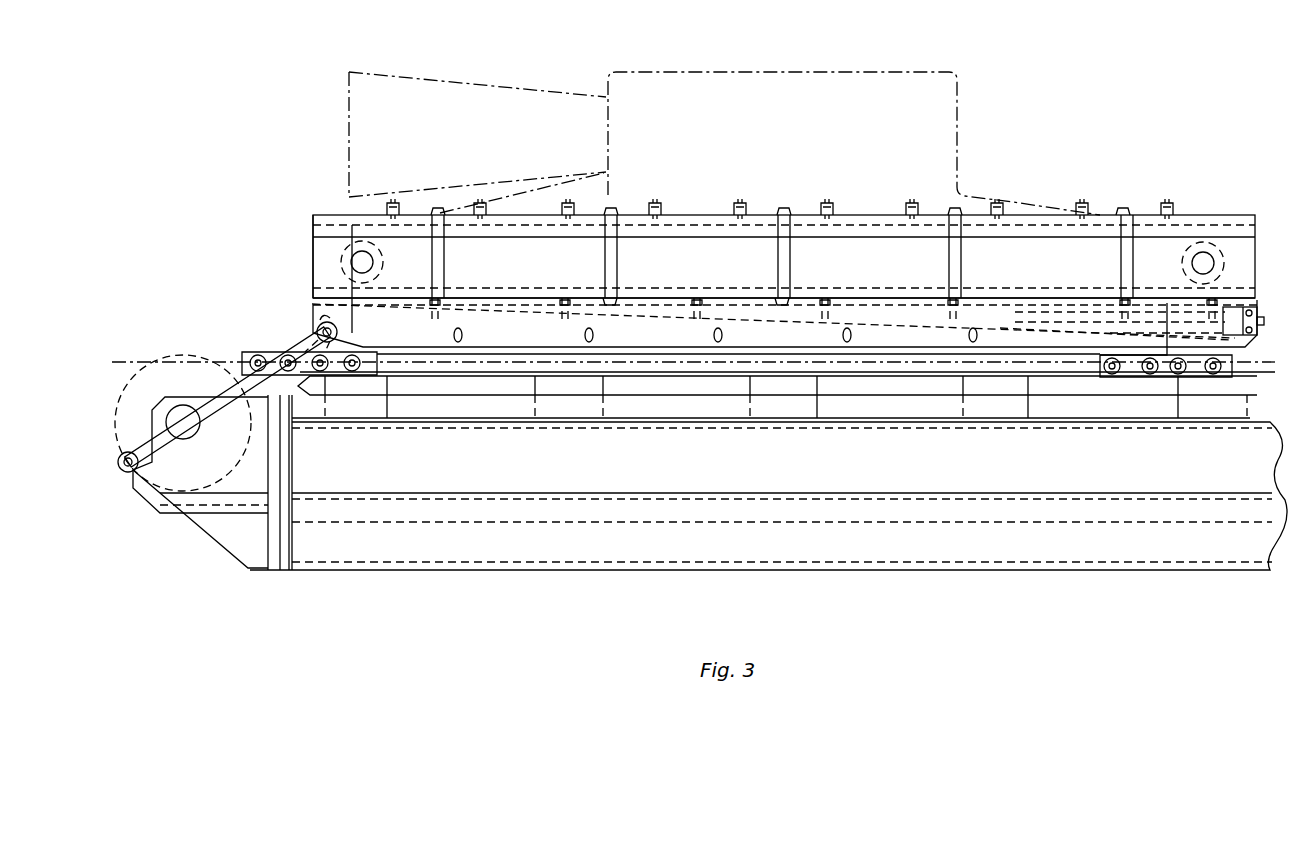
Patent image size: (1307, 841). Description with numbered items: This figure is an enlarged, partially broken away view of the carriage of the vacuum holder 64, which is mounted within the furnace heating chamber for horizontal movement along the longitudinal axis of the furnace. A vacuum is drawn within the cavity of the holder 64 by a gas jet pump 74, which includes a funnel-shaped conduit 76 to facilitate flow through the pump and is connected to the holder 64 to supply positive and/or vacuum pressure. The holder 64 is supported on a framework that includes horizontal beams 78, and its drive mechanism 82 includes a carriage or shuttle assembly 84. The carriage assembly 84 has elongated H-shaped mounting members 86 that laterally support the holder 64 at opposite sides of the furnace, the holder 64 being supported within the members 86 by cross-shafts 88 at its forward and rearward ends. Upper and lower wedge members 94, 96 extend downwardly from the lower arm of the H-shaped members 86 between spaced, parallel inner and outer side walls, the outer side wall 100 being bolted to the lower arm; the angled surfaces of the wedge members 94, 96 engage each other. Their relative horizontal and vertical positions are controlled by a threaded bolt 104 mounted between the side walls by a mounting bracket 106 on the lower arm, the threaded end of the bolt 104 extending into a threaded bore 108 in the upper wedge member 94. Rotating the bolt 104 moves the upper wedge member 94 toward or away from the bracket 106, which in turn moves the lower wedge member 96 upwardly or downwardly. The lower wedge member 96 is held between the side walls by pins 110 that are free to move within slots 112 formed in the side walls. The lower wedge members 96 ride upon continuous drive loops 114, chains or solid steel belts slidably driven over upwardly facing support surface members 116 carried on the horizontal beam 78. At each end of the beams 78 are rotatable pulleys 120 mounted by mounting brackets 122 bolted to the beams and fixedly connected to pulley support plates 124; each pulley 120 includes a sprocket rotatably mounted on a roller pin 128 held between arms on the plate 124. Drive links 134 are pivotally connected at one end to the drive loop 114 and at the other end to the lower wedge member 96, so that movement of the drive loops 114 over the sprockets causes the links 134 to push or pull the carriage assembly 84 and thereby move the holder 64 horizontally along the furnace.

The vacuum holder 64 is at (1193, 216).
The gas jet pump 74 is at (958, 73).
The funnel-shaped conduit 76 is at (503, 87).
The horizontal beam 78 is at (652, 572).
The drive mechanism 82 is at (223, 230).
The carriage assembly 84 is at (297, 264).
The H-shaped mounting member 86 is at (320, 296).
The cross-shaft 88 is at (350, 272).
The upper wedge member 94 is at (1166, 340).
The lower wedge member 96 is at (312, 318).
The outer side wall 100 is at (530, 340).
The threaded bolt 104 is at (1263, 325).
The mounting bracket 106 is at (1255, 302).
The threaded bore 108 is at (1018, 318).
The pin 110 is at (714, 335).
The slot 112 is at (1005, 330).
The drive loop 114 is at (247, 355).
The support surface member 116 is at (305, 394).
The pulley 120 is at (146, 378).
The mounting bracket 122 is at (232, 540).
The pulley support plate 124 is at (258, 455).
The roller pin 128 is at (196, 438).
The drive link 134 is at (240, 385).